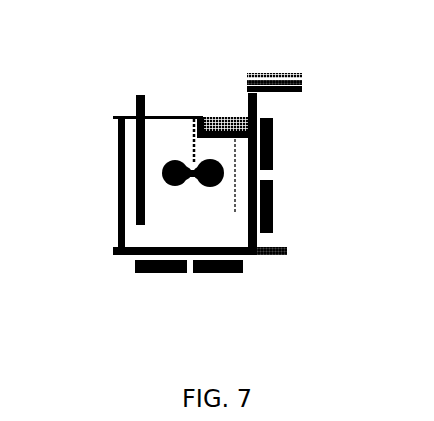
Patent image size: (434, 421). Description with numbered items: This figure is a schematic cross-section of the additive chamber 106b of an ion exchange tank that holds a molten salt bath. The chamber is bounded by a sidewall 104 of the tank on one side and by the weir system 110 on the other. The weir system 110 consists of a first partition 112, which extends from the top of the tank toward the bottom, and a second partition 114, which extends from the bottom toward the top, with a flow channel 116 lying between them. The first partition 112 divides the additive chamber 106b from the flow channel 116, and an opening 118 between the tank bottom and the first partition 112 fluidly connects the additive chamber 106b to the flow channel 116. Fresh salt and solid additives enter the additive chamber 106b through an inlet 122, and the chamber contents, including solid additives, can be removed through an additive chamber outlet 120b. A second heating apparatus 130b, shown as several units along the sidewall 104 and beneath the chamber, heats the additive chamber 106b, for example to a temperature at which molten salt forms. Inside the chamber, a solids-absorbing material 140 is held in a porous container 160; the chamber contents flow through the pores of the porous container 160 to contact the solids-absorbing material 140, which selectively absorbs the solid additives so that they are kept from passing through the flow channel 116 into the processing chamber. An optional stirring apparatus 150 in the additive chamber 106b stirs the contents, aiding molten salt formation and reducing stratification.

The weir system 110 is at (114, 90).
The additive chamber 106b is at (199, 60).
The second partition 114 is at (118, 143).
The flow channel 116 is at (134, 183).
The first partition 112 is at (145, 198).
The opening 118 is at (137, 235).
The sidewall 104 is at (258, 102).
The stirring apparatus 150 is at (192, 143).
The solids-absorbing material 140 is at (227, 116).
The porous container 160 is at (225, 188).
The inlet 122 is at (252, 72).
The second heating apparatus 130b is at (292, 130).
The additive chamber outlet 120b is at (287, 255).